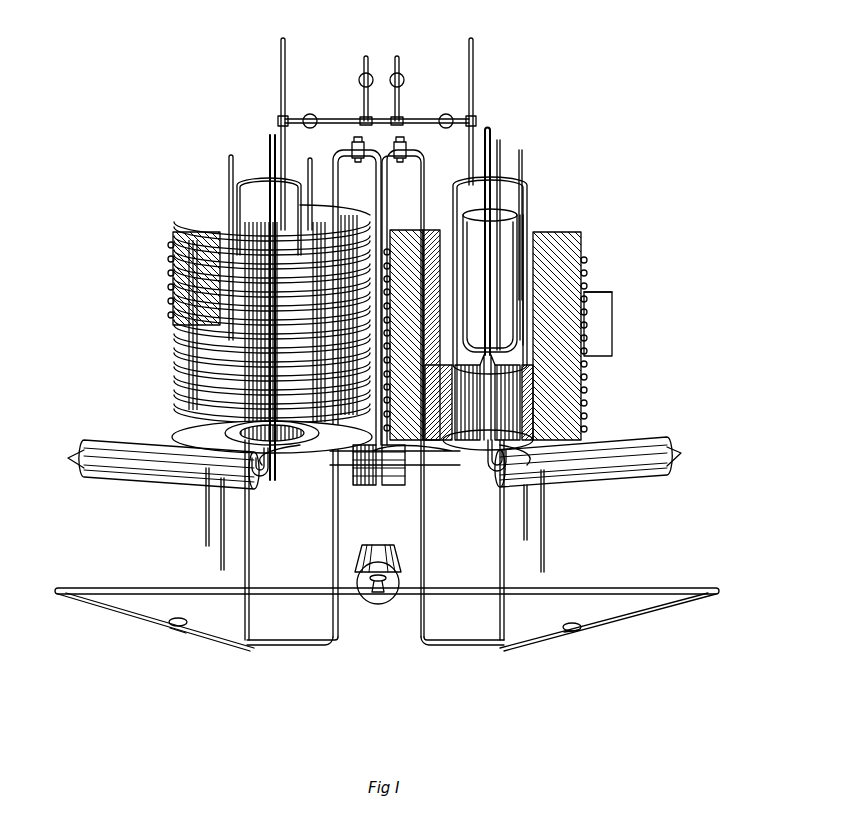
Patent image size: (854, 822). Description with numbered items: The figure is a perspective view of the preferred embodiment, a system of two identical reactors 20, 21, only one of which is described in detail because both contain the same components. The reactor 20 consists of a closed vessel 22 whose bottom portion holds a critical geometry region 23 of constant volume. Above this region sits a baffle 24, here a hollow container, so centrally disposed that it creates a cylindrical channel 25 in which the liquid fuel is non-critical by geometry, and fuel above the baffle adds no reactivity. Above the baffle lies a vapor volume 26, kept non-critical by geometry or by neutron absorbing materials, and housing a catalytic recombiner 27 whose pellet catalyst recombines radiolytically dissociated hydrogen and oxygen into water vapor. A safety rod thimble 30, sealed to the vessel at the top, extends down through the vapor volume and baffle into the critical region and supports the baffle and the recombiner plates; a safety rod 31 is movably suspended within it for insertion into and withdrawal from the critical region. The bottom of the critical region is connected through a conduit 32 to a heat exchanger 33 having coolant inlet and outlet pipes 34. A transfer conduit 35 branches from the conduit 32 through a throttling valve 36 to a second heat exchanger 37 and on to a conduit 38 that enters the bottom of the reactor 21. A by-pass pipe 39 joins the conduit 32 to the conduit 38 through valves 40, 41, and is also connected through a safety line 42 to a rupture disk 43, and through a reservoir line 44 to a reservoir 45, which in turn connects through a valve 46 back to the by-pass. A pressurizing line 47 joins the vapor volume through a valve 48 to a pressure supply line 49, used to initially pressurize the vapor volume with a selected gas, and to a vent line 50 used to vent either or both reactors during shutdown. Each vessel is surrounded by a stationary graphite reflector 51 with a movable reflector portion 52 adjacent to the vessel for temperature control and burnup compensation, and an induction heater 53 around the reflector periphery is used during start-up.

The reactor 20 is at (500, 220).
The reactor 21 is at (236, 190).
The closed vessel 22 is at (508, 230).
The critical geometry region 23 is at (612, 321).
The baffle 24 is at (524, 240).
The cylindrical channel 25 is at (522, 224).
The vapor volume 26 is at (521, 150).
The catalytic recombiner 27 is at (505, 195).
The safety rod thimble 30 is at (500, 142).
The safety rod 31 is at (489, 132).
The conduit 32 is at (584, 392).
The heat exchanger 33 is at (604, 482).
The coolant inlet and outlet pipes 34 is at (218, 566).
The transfer conduit 35 is at (84, 452).
The throttling valve 36 is at (405, 486).
The second heat exchanger 37 is at (128, 482).
The conduit 38 is at (270, 478).
The by-pass pipe 39 is at (249, 576).
The valve 40 is at (578, 632).
The valve 41 is at (188, 634).
The safety line 42 is at (421, 642).
The rupture disk 43 is at (404, 138).
The reservoir line 44 is at (382, 190).
The reservoir 45 is at (386, 556).
The valve 46 is at (392, 600).
The pressurizing line 47 is at (281, 133).
The valve 48 is at (446, 114).
The pressure supply line 49 is at (397, 56).
The vent line 50 is at (366, 56).
The stationary graphite reflector 51 is at (586, 292).
The movable reflector portion 52 is at (584, 420).
The induction heater 53 is at (587, 262).